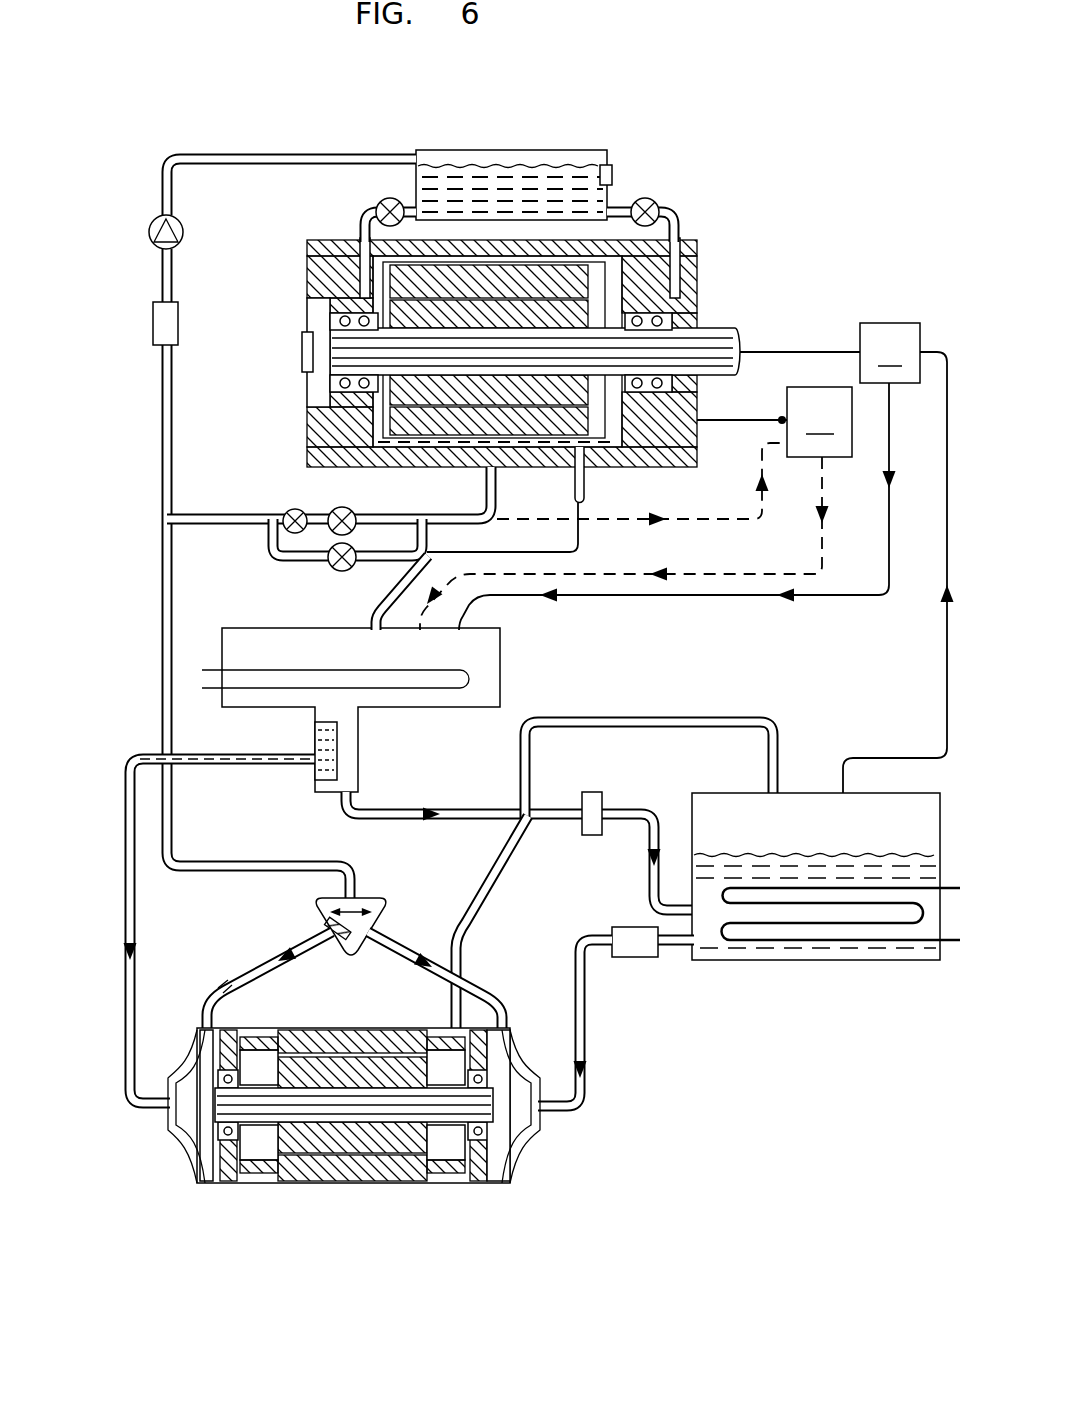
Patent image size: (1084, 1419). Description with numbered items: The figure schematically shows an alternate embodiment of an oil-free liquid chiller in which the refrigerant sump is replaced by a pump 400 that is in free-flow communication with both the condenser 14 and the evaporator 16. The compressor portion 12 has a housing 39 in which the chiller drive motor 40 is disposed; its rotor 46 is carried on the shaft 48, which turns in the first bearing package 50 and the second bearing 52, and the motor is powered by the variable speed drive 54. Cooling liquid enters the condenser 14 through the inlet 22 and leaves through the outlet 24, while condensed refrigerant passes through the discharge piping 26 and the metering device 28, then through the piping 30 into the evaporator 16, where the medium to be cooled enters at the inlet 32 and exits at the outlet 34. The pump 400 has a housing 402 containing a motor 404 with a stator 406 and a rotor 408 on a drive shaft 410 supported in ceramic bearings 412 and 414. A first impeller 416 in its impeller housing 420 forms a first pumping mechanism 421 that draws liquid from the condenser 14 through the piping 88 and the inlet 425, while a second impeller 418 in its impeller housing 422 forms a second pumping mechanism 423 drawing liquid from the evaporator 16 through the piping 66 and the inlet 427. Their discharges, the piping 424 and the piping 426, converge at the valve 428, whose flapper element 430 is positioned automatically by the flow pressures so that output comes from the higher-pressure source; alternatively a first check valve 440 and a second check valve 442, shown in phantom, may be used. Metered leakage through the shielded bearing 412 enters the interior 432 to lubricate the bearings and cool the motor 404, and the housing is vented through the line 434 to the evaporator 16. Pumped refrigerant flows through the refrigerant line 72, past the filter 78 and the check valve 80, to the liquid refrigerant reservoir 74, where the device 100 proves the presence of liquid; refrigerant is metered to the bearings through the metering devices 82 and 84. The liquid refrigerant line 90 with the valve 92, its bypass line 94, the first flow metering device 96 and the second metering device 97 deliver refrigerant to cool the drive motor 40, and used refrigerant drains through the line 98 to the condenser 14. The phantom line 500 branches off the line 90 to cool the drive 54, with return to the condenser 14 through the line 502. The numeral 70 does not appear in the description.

The compressor portion 12 is at (706, 558).
The condenser 14 is at (230, 628).
The evaporator 16 is at (826, 960).
The inlet 22 is at (215, 665).
The outlet 24 is at (215, 690).
The discharge piping 26 is at (335, 805).
The metering device 28 is at (582, 792).
The piping 30 is at (622, 808).
The inlet 32 is at (958, 888).
The outlet 34 is at (958, 945).
The housing 39 is at (330, 240).
The chiller drive motor 40 is at (600, 283).
The rotor 46 is at (455, 398).
The shaft 48 is at (735, 340).
The first bearing package 50 is at (660, 318).
The second bearing 52 is at (335, 318).
The variable speed drive 54 is at (774, 422).
The piping 66 is at (587, 1110).
The pump 70 is at (640, 957).
The refrigerant line 72 is at (160, 462).
The liquid refrigerant reservoir 74 is at (547, 150).
The filter 78 is at (153, 327).
The check valve 80 is at (150, 232).
The metering device 82 is at (654, 205).
The metering device 84 is at (385, 198).
The line 88 is at (283, 755).
The liquid refrigerant line 90 is at (232, 513).
The valve 92 is at (295, 509).
The bypass line 94 is at (290, 562).
The first flow metering device 96 is at (348, 507).
The second metering device 97 is at (342, 571).
The line 98 is at (586, 490).
The device 100 is at (612, 175).
The pump 400 is at (335, 1205).
The housing 402 is at (442, 1195).
The motor 404 is at (255, 1014).
The stator 406 is at (370, 1040).
The rotor 408 is at (400, 1075).
The drive shaft 410 is at (275, 1170).
The ceramic bearing 412 is at (225, 1140).
The ceramic bearing 414 is at (505, 1070).
The first impeller 416 is at (190, 1070).
The second impeller 418 is at (495, 1030).
The impeller housing 420 is at (148, 1135).
The first pumping mechanism 421 is at (140, 1130).
The impeller housing 422 is at (535, 1148).
The second pumping mechanism 423 is at (565, 1131).
The piping 424 is at (262, 970).
The inlet 425 is at (160, 1100).
The piping 426 is at (400, 935).
The inlet 427 is at (575, 1098).
The valve 428 is at (300, 913).
The flapper element 430 is at (342, 945).
The interior 432 is at (460, 1170).
The line 434 is at (732, 718).
The first check valve 440 is at (218, 985).
The second check valve 442 is at (470, 980).
The line 500 is at (692, 515).
The line 502 is at (712, 572).